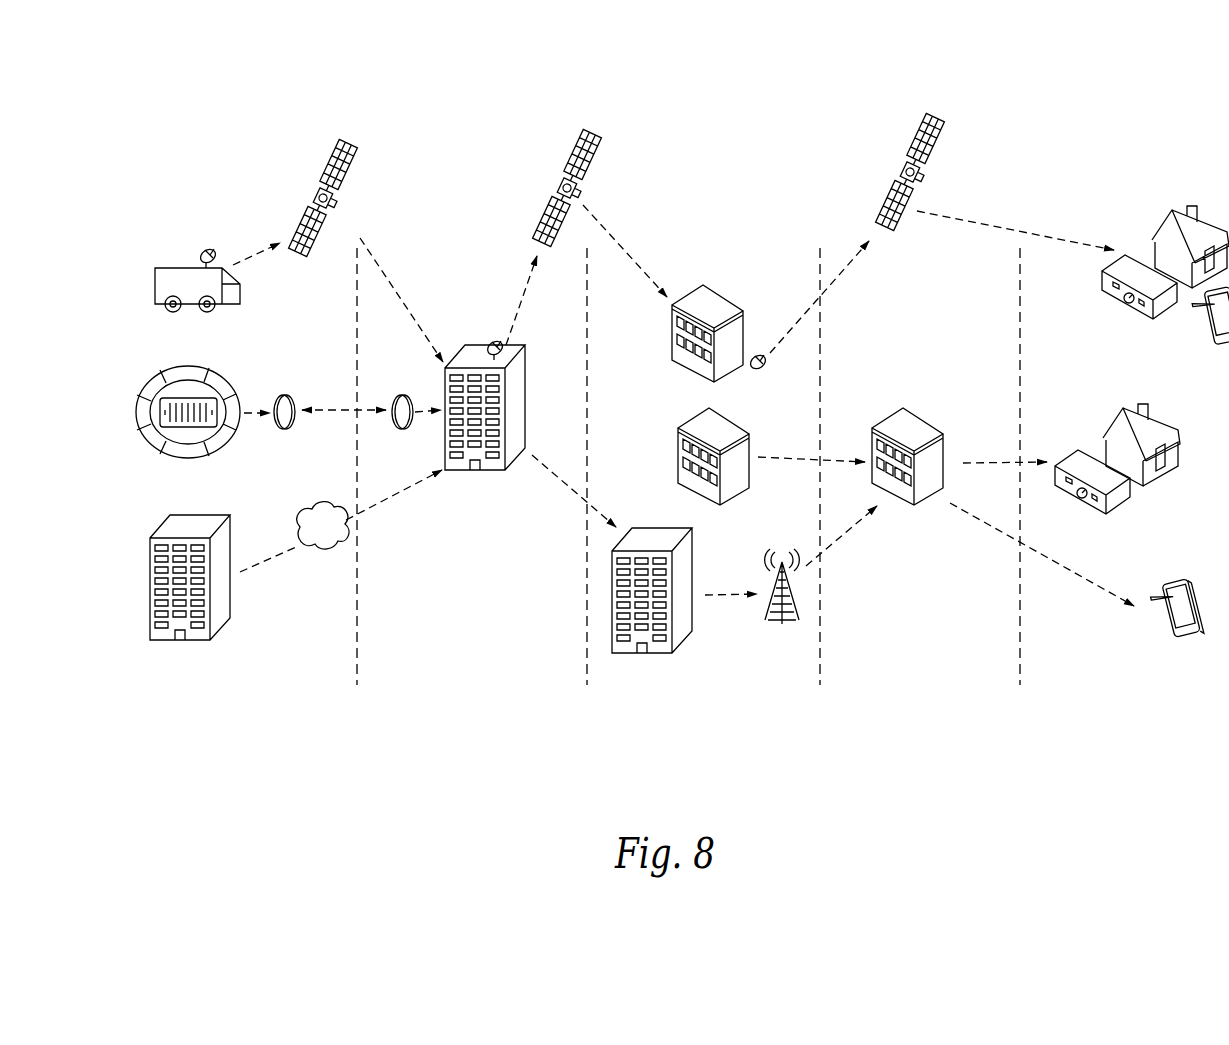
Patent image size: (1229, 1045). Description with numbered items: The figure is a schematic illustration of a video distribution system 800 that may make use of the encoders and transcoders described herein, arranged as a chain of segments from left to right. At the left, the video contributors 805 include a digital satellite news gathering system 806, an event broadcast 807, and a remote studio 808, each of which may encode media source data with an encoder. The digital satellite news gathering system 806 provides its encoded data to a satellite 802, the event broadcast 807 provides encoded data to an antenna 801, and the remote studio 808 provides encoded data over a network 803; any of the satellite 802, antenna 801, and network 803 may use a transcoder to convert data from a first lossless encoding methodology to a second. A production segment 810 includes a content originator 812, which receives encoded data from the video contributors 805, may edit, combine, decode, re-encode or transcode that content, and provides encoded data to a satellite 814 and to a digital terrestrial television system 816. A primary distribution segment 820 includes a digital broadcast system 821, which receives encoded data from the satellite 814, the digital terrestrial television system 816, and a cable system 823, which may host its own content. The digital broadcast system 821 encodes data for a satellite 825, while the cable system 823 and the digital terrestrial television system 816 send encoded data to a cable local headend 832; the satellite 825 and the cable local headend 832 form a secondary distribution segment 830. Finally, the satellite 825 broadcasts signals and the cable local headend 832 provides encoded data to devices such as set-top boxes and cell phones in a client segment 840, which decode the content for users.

The video distribution system 800 is at (1171, 122).
The antenna 801 is at (283, 395).
The satellite 802 is at (346, 134).
The network 803 is at (318, 556).
The video contributors 805 is at (233, 704).
The digital satellite news gathering system 806 is at (183, 267).
The event broadcast 807 is at (188, 372).
The remote studio 808 is at (233, 605).
The production segment 810 is at (466, 704).
The content originator 812 is at (492, 472).
The satellite 814 is at (588, 127).
The digital terrestrial television system 816 is at (660, 662).
The primary distribution segment 820 is at (736, 704).
The digital broadcast system 821 is at (673, 320).
The cable system 823 is at (678, 440).
The satellite 825 is at (940, 110).
The secondary distribution segment 830 is at (919, 704).
The cable local headend 832 is at (888, 415).
The client segment 840 is at (1157, 704).